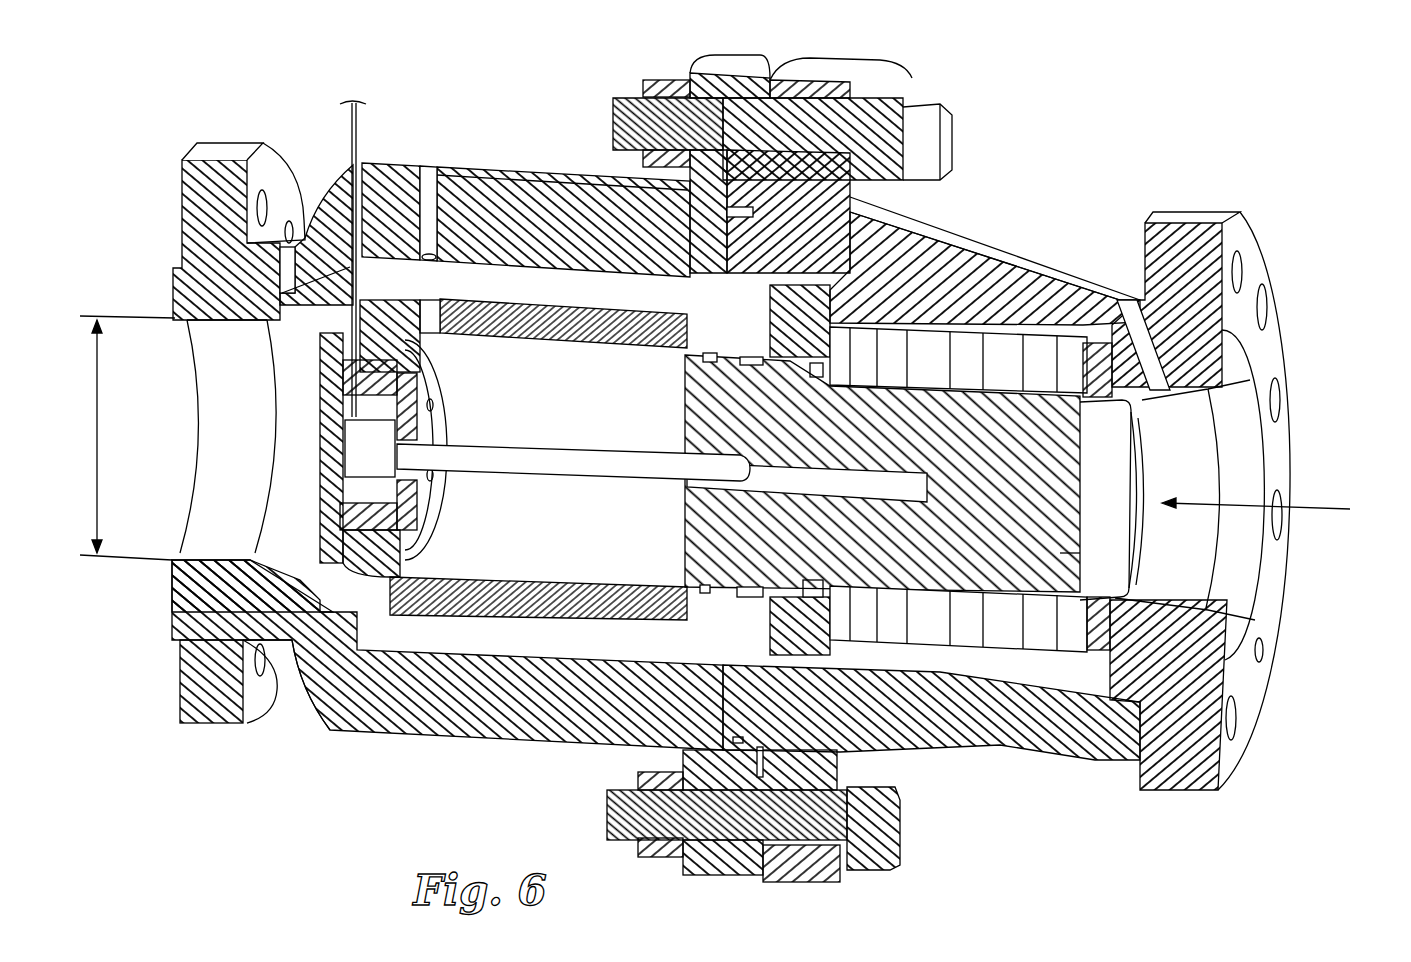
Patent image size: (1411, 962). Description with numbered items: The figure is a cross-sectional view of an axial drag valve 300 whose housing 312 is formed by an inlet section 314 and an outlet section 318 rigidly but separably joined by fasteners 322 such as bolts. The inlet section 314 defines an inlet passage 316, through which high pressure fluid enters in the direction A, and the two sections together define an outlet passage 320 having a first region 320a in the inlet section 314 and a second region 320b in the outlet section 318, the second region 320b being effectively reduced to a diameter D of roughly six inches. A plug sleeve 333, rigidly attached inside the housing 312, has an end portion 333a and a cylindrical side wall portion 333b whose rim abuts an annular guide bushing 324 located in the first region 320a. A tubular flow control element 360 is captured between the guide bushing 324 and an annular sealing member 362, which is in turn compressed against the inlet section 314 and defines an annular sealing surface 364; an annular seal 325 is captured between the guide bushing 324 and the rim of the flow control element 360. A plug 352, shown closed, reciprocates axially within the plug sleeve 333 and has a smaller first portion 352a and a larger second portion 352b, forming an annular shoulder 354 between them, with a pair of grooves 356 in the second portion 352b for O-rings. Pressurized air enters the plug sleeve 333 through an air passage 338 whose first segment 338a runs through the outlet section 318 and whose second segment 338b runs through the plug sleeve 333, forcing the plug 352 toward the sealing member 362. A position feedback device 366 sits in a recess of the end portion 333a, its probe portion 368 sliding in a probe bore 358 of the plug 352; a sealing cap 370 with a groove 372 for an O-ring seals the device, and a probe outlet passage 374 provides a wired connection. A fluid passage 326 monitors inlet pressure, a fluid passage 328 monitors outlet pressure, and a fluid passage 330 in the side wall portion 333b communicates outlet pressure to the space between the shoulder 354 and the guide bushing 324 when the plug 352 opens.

The axial drag valve 300 is at (721, 445).
The housing 312 is at (490, 150).
The inlet section 314 is at (1177, 228).
The inlet passage 316 is at (1245, 457).
The outlet section 318 is at (570, 193).
The outlet passage 320 is at (437, 650).
The first region 320a is at (957, 668).
The second region 320b is at (353, 650).
The fasteners 322 is at (887, 100).
The guide bushing 324 is at (925, 225).
The annular seal 325 is at (957, 320).
The fluid passage 326 is at (1120, 300).
The fluid passage 328 is at (280, 270).
The fluid passage 330 is at (705, 320).
The plug sleeve 333 is at (490, 290).
The end portion 333a is at (300, 597).
The side wall portion 333b is at (510, 605).
The air passage 338 is at (403, 195).
The first segment 338a is at (432, 183).
The second segment 338b is at (428, 312).
The plug 352 is at (1040, 660).
The first portion 352a is at (1085, 553).
The second portion 352b is at (703, 402).
The annular shoulder 354 is at (905, 760).
The grooves 356 is at (750, 592).
The probe bore 358 is at (697, 482).
The flow control element 360 is at (1040, 320).
The sealing member 362 is at (1130, 355).
The annular sealing surface 364 is at (1085, 443).
The position feedback device 366 is at (353, 433).
The probe portion 368 is at (490, 447).
The sealing cap 370 is at (320, 363).
The groove 372 is at (367, 613).
The probe outlet passage 374 is at (347, 187).
The flow direction A is at (1350, 509).
The diameter D is at (127, 438).